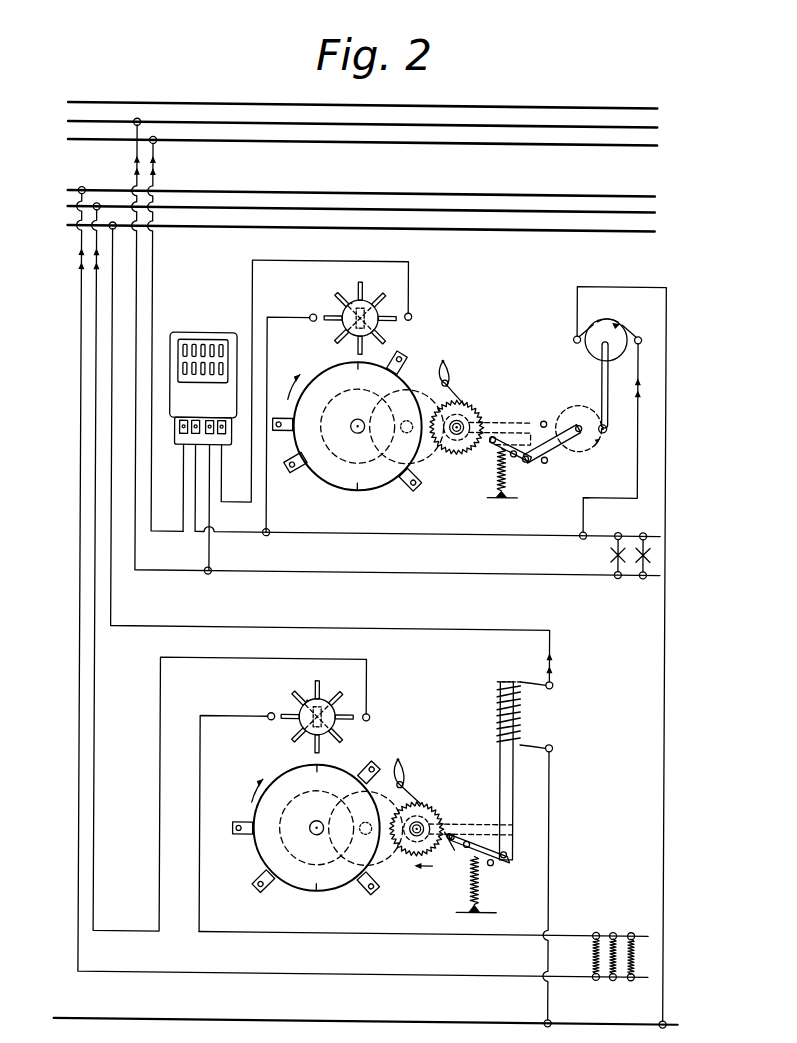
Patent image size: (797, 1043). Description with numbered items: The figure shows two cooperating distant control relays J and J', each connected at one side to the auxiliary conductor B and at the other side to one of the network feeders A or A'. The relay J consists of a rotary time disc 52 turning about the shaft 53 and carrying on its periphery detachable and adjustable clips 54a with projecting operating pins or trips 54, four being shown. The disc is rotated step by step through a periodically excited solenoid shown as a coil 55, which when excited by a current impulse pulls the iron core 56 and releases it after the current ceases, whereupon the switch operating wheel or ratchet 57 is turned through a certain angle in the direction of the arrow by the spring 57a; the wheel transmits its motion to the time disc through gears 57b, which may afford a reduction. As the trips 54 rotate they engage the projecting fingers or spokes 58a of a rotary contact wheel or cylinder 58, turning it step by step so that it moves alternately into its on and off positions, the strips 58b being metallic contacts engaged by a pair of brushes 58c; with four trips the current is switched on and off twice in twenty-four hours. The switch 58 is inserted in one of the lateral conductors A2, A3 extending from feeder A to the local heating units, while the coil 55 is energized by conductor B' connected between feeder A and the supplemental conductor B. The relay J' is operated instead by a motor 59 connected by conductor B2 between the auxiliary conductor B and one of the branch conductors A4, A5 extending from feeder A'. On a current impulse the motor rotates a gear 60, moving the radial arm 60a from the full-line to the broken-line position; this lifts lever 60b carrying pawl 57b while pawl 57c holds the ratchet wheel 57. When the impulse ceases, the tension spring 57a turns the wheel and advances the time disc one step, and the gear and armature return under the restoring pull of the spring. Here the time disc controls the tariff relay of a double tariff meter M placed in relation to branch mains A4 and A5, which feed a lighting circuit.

The rotary time disc 52 is at (372, 488).
The shaft 53 is at (318, 818).
The operating pins or trips 54 is at (281, 430).
The detachable and adjustable clips 54a is at (300, 470).
The electromagnet or solenoid coil 55 is at (524, 718).
The iron core 56 is at (503, 770).
The switch operating wheel or ratchet 57 is at (472, 410).
The tension spring 57a is at (518, 462).
The gears / pawl 57b is at (430, 400).
The holding pawl 57c is at (466, 382).
The rotary contact wheel or cylinder 58 is at (387, 322).
The projecting fingers or spokes 58a is at (352, 298).
The metallic contact strips 58b is at (343, 311).
The brushes 58c is at (411, 309).
The motor 59 is at (601, 353).
The gear 60 is at (577, 445).
The radial arm 60a is at (585, 492).
The lever 60b is at (545, 419).
The feeder A is at (377, 211).
The feeder A' is at (380, 124).
The lateral conductor A2 is at (367, 570).
The lateral conductor A3 is at (345, 582).
The branch conductor A4 is at (137, 284).
The branch conductor A5 is at (165, 333).
The auxiliary conductor B is at (366, 1007).
The conductor B' is at (331, 455).
The conductor B2 is at (670, 340).
The double tariff meter M is at (204, 378).
The distant control relay J is at (359, 799).
The distant control relay J' is at (451, 402).